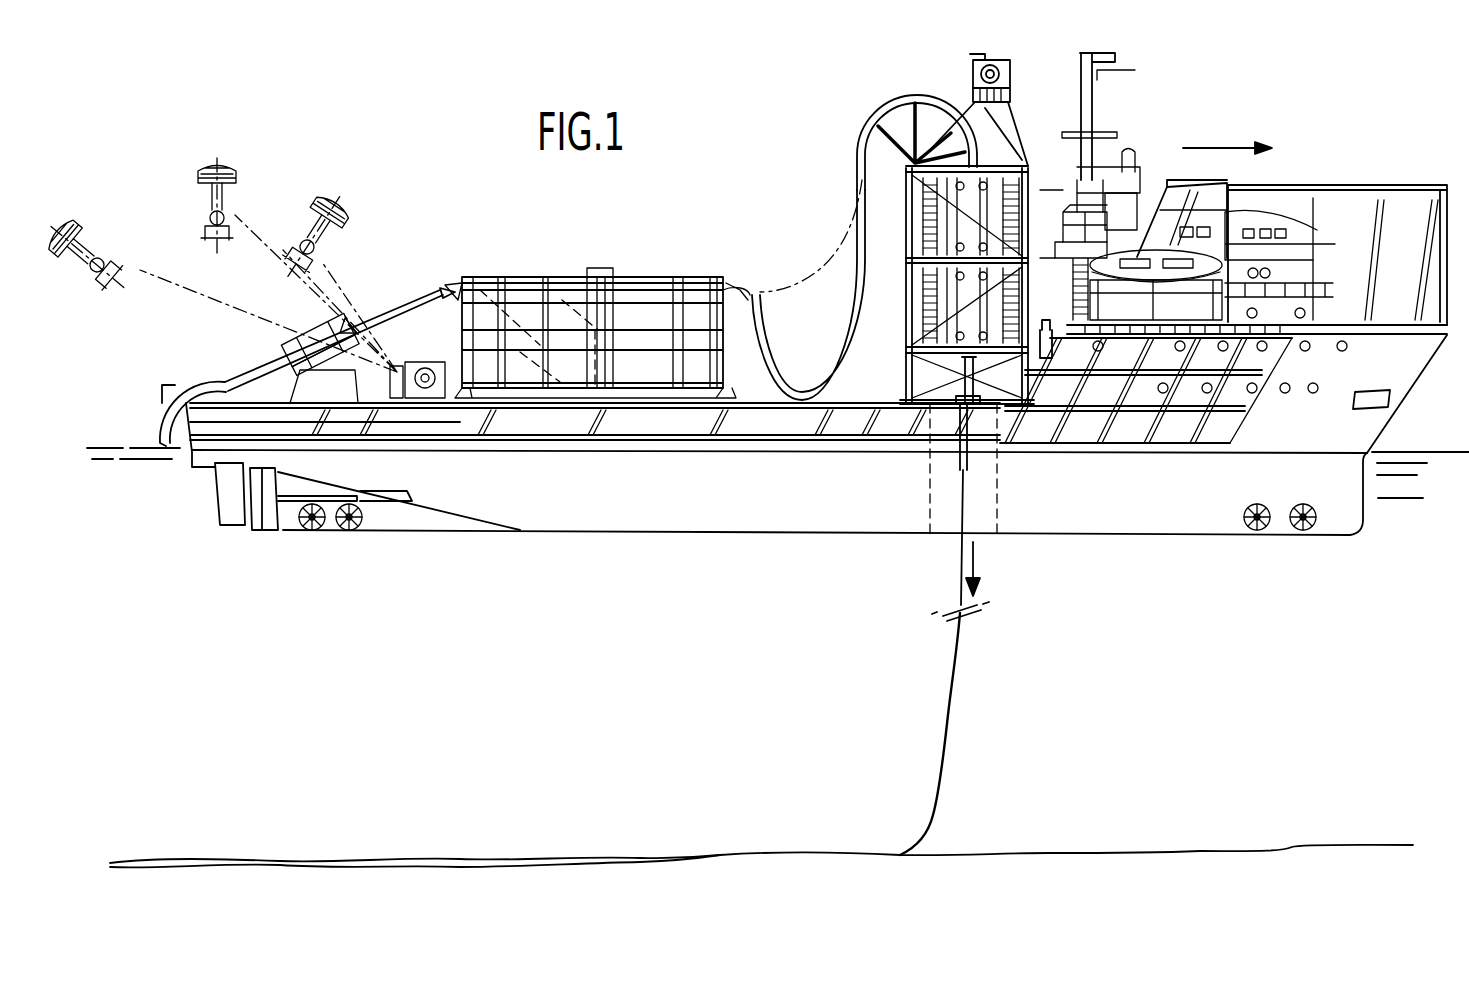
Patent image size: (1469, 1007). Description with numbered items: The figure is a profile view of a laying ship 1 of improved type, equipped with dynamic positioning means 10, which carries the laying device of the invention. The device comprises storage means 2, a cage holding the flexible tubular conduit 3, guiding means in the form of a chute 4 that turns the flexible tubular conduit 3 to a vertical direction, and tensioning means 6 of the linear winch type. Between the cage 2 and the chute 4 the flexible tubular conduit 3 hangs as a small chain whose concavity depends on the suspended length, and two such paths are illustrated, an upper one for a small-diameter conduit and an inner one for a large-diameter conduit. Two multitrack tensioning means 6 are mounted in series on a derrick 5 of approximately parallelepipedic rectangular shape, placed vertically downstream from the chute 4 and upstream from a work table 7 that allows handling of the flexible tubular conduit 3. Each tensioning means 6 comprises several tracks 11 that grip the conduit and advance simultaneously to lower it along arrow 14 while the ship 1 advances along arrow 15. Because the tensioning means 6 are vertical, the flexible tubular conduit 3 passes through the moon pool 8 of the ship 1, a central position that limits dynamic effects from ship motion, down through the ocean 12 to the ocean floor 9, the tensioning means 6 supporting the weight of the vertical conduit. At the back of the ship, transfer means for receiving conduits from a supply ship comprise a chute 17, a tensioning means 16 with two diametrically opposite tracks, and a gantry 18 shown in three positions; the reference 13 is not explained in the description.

The laying ship 1 is at (1115, 554).
The storage means 2 is at (647, 284).
The flexible tubular conduit 3 is at (393, 302).
The guiding means 4 is at (893, 98).
The derrick 5 is at (1032, 185).
The tensioning means 6 is at (1012, 222).
The work table 7 is at (928, 385).
The moon pool 8 is at (996, 503).
The ocean floor 9 is at (1067, 848).
The dynamic positioning means 10 is at (345, 530).
The tracks 11 is at (927, 297).
The ocean 12 is at (1125, 708).
The reel supports 13 is at (752, 400).
The arrow 14 is at (974, 546).
The arrow 15 is at (1193, 147).
The tensioning means 16 is at (280, 350).
The chute 17 is at (160, 442).
The gantry 18 is at (208, 212).